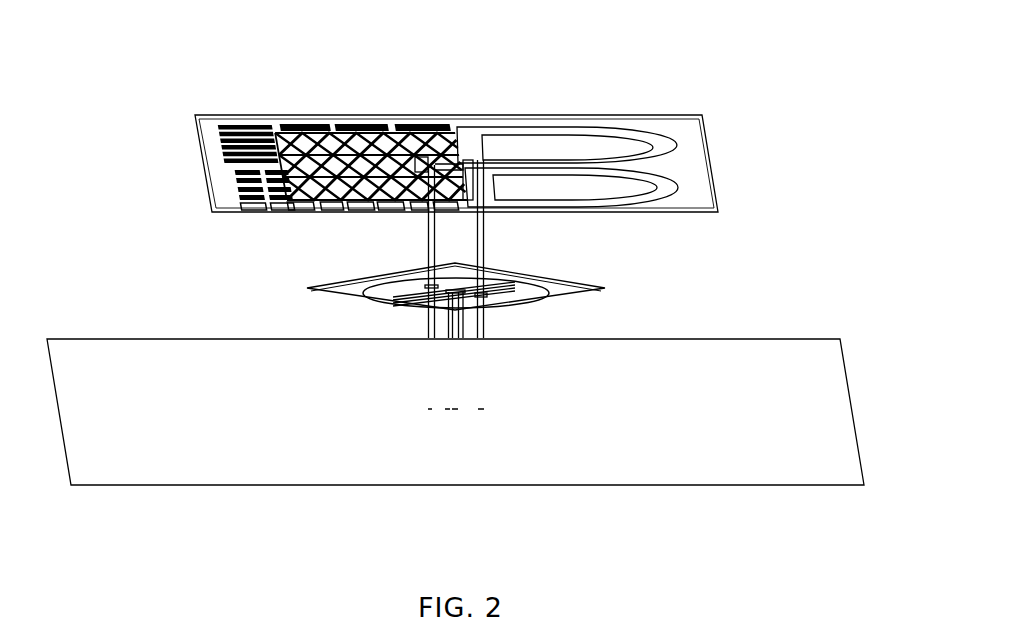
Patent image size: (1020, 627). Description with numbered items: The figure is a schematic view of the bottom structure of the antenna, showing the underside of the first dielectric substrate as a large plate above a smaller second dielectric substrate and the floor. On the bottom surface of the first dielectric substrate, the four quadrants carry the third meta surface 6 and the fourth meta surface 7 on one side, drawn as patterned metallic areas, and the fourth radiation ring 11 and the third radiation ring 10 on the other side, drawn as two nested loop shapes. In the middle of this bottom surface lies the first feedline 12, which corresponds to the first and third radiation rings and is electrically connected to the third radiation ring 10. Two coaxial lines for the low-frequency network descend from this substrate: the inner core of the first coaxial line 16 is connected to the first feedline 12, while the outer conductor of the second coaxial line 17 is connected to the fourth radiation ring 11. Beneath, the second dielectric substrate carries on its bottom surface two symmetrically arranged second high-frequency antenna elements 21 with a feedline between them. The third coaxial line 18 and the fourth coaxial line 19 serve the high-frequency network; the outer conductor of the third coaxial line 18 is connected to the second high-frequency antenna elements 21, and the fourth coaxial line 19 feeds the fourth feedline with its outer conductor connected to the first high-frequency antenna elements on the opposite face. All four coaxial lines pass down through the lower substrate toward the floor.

The third meta surface 6 is at (370, 138).
The fourth meta surface 7 is at (345, 185).
The third radiation ring 10 is at (508, 128).
The fourth radiation ring 11 is at (670, 180).
The first feedline 12 is at (441, 163).
The first coaxial line 16 is at (428, 331).
The second coaxial line 17 is at (483, 331).
The third coaxial line 18 is at (450, 331).
The fourth coaxial line 19 is at (461, 331).
The second high-frequency antenna element 21 is at (513, 302).